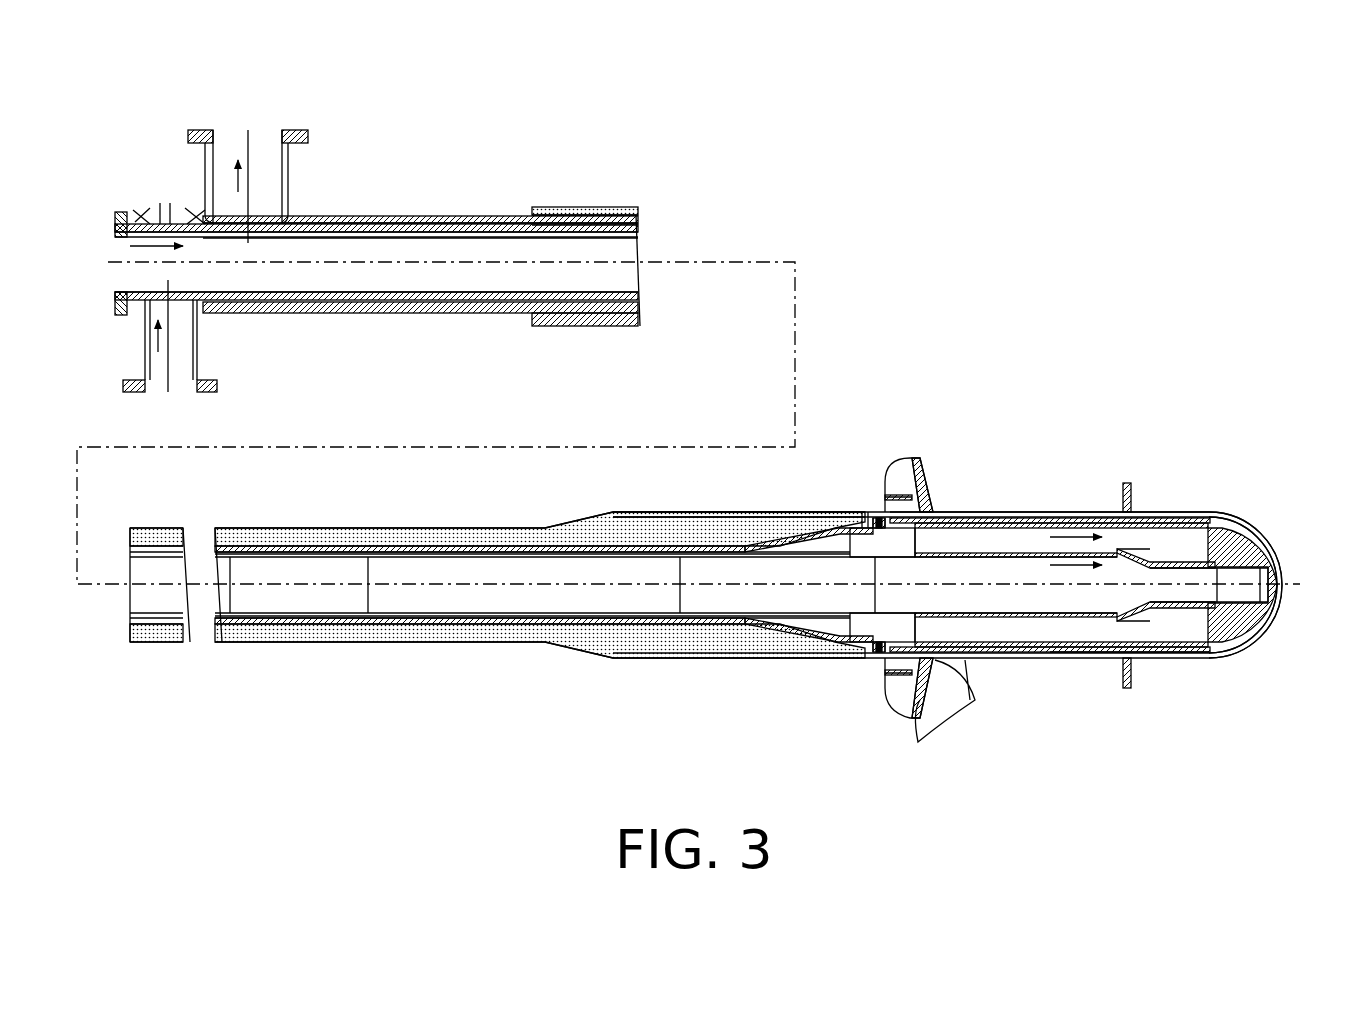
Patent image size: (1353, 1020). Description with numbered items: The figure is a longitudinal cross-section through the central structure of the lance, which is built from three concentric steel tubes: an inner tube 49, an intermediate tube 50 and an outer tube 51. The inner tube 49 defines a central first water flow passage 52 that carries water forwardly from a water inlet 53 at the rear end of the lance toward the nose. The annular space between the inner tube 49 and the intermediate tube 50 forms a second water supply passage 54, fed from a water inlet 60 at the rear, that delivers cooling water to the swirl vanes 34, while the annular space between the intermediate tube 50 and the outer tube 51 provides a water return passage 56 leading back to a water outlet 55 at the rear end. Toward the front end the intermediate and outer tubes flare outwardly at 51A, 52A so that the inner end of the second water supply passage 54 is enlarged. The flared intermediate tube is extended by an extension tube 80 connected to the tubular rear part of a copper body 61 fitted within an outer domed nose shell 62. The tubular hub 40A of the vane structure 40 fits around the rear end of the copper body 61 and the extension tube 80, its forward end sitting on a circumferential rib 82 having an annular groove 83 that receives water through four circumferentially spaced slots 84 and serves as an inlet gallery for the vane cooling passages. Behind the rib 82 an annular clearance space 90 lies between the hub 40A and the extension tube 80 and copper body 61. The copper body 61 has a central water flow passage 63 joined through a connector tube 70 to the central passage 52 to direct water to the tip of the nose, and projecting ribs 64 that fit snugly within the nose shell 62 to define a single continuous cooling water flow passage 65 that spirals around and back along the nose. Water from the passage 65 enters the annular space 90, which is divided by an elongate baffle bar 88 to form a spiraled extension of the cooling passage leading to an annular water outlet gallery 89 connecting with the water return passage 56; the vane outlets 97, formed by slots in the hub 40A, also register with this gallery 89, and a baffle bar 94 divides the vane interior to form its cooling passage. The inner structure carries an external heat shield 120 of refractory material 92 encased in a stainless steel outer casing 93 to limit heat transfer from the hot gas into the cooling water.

The swirl vanes 34 is at (1130, 483).
The vane structure 40 is at (938, 456).
The tubular hub 40A is at (990, 512).
The inner tube 49 is at (462, 237).
The intermediate tube 50 is at (512, 226).
The outer tube 51 is at (553, 222).
The flared portion of intermediate tube 51A is at (812, 640).
The central first water flow passage 52 is at (620, 255).
The flared portion of outer tube 52A is at (744, 650).
The water inlet 53 is at (160, 385).
The second water supply passage 54 is at (640, 229).
The water outlet 55 is at (232, 145).
The water return passage 56 is at (388, 222).
The water inlet 60 is at (172, 205).
The copper body 61 is at (1236, 632).
The outer domed nose shell 62 is at (1252, 540).
The central water flow passage 63 is at (1190, 585).
The projecting ribs 64 is at (1226, 520).
The cooling water flow passage 65 is at (1272, 625).
The connector tube 70 is at (1145, 600).
The extension tube 80 is at (908, 700).
The circumferential rib 82 is at (1100, 652).
The annular groove 83 is at (1125, 680).
The slots 84 is at (1127, 485).
The baffle bar 88 is at (968, 518).
The annular water outlet gallery 89 is at (870, 512).
The annular clearance space 90 is at (1047, 523).
The refractory material 92 is at (640, 215).
The outer casing 93 is at (618, 207).
The baffle bar 94 is at (878, 512).
The outlets 97 is at (906, 470).
The external heat shield 120 is at (340, 527).